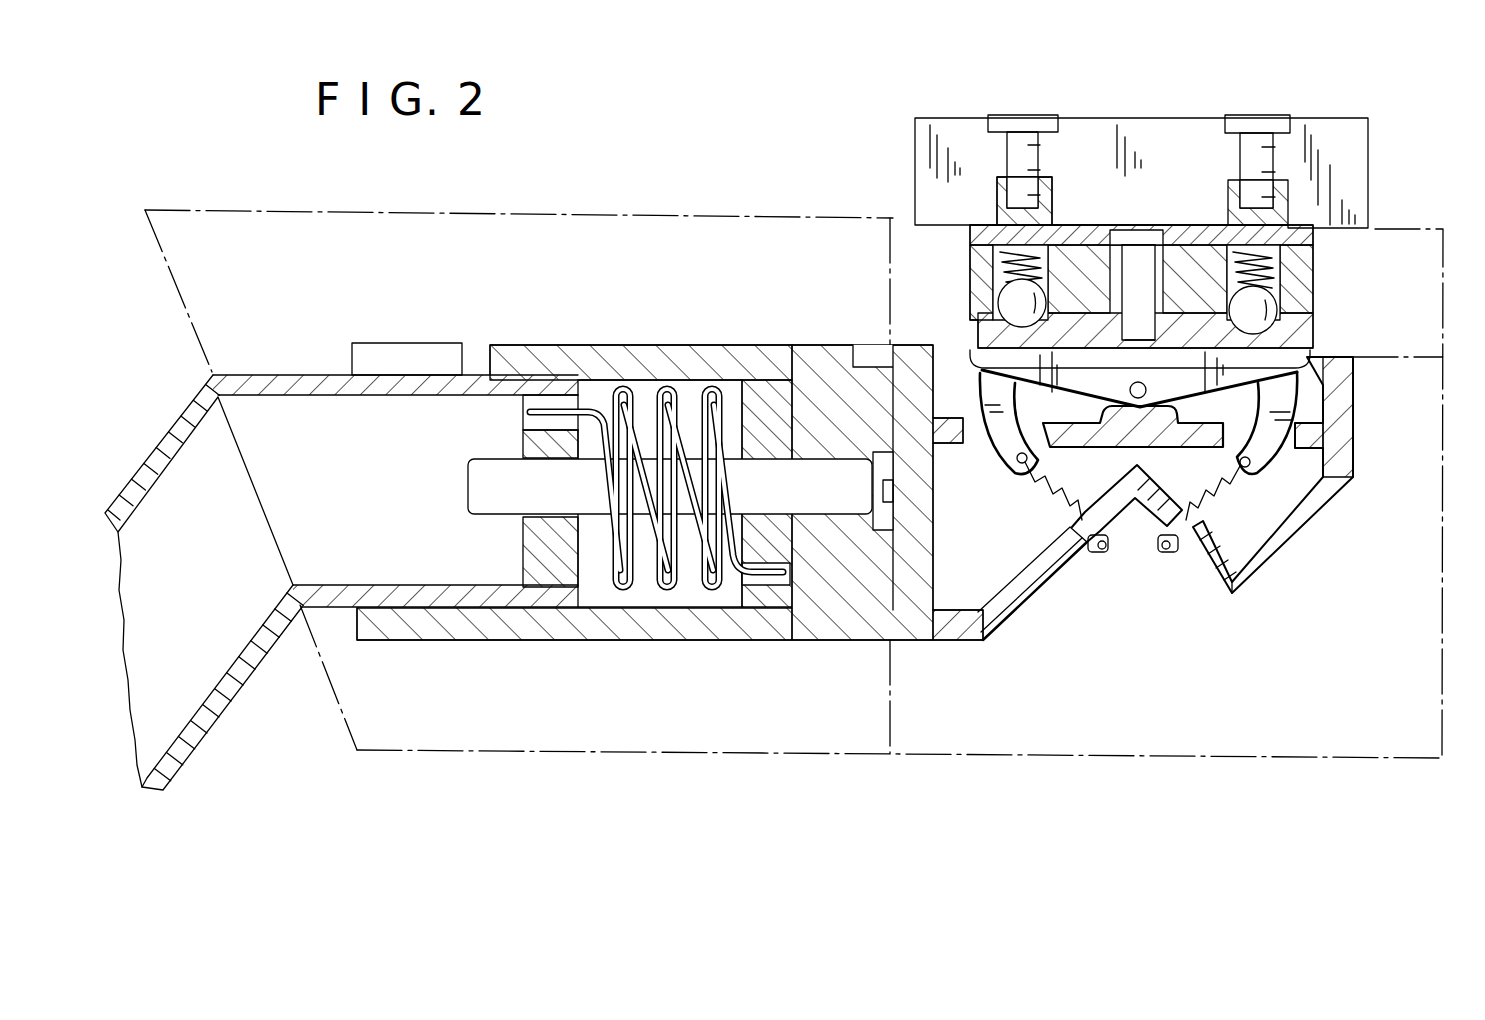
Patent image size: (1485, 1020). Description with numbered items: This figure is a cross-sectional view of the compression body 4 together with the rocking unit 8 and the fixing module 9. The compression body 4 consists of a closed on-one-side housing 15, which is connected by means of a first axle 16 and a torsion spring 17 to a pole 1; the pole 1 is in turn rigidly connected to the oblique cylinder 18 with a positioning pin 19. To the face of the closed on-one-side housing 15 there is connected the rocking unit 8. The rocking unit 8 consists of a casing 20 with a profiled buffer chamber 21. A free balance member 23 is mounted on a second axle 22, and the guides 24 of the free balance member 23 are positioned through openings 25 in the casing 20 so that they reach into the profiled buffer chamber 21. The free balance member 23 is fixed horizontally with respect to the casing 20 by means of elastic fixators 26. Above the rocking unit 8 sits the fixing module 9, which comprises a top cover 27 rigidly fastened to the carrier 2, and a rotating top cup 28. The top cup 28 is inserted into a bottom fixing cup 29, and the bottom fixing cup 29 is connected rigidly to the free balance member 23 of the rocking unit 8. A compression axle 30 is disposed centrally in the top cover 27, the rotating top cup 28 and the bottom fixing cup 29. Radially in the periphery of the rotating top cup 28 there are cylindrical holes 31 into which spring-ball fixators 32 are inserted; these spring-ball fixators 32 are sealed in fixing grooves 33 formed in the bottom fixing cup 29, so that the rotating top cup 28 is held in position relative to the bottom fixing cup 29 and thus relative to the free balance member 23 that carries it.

The pole 1 is at (193, 463).
The carrier 2 is at (1323, 132).
The compression body 4 is at (352, 700).
The rocking unit 8 is at (1015, 742).
The fixing module 9 is at (1400, 240).
The closed on-one-side housing 15 is at (810, 356).
The first axle 16 is at (478, 490).
The torsion spring 17 is at (667, 405).
The oblique cylinder 18 is at (480, 380).
The positioning pin 19 is at (390, 352).
The casing 20 is at (1318, 508).
The profiled buffer chamber 21 is at (1018, 553).
The second axle 22 is at (1130, 392).
The free balance member 23 is at (1242, 370).
The guides 24 is at (1000, 440).
The openings 25 is at (972, 372).
The elastic fixators 26 is at (1080, 494).
The top cover 27 is at (1222, 232).
The rotating top cup 28 is at (1138, 268).
The bottom fixing cup 29 is at (982, 305).
The compression axle 30 is at (1135, 345).
The cylindrical holes 31 is at (1010, 245).
The spring-ball fixators 32 is at (1004, 306).
The fixing grooves 33 is at (1293, 315).